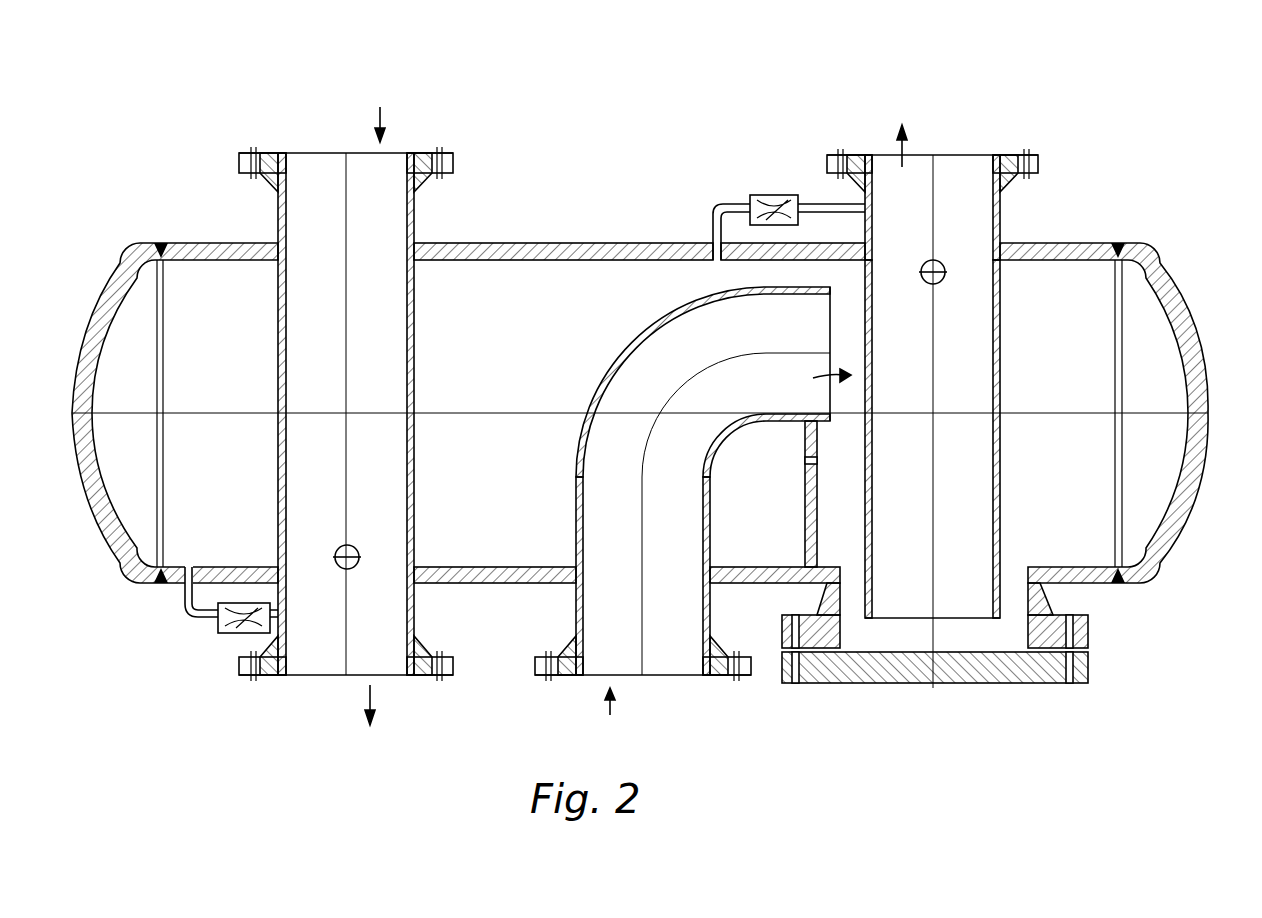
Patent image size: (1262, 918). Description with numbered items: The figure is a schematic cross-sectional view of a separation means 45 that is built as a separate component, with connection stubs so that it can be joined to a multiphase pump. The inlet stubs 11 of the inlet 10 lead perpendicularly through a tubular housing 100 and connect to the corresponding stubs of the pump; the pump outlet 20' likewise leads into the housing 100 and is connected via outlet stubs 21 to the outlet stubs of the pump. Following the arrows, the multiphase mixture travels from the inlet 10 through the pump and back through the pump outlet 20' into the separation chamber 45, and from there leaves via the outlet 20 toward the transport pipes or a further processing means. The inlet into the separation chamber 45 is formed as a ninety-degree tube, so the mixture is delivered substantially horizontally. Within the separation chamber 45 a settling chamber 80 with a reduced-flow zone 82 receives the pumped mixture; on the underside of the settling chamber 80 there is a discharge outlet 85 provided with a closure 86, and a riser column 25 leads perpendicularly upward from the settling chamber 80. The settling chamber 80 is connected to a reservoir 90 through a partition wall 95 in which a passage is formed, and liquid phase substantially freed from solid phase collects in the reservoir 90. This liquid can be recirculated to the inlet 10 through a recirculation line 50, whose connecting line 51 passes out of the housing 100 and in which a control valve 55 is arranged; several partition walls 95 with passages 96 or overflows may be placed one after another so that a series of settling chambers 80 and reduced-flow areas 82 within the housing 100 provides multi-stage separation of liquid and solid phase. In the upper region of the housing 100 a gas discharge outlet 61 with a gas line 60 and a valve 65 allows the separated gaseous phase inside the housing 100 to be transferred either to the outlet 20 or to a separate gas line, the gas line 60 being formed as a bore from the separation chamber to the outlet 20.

The inlet 10 is at (313, 663).
The inlet stub 11 is at (270, 153).
The outlet 20 is at (993, 389).
The pump outlet 20' is at (643, 607).
The outlet stub 21 is at (1027, 155).
The riser column 25 is at (1000, 328).
The separation means 45 is at (640, 338).
The recirculation line 50 is at (336, 553).
The sensor line 51 is at (187, 565).
The control valve 55 is at (223, 632).
The gas line 60 is at (945, 268).
The gas discharge outlet 61 is at (716, 262).
The valve 65 is at (769, 198).
The settling chamber 80 is at (1060, 537).
The reduced-flow zone 82 is at (1060, 462).
The discharge outlet 85 is at (877, 640).
The closure 86 is at (977, 680).
The reservoir 90 is at (508, 548).
The partition wall 95 is at (805, 500).
The passage 96 is at (805, 452).
The housing 100 is at (523, 243).